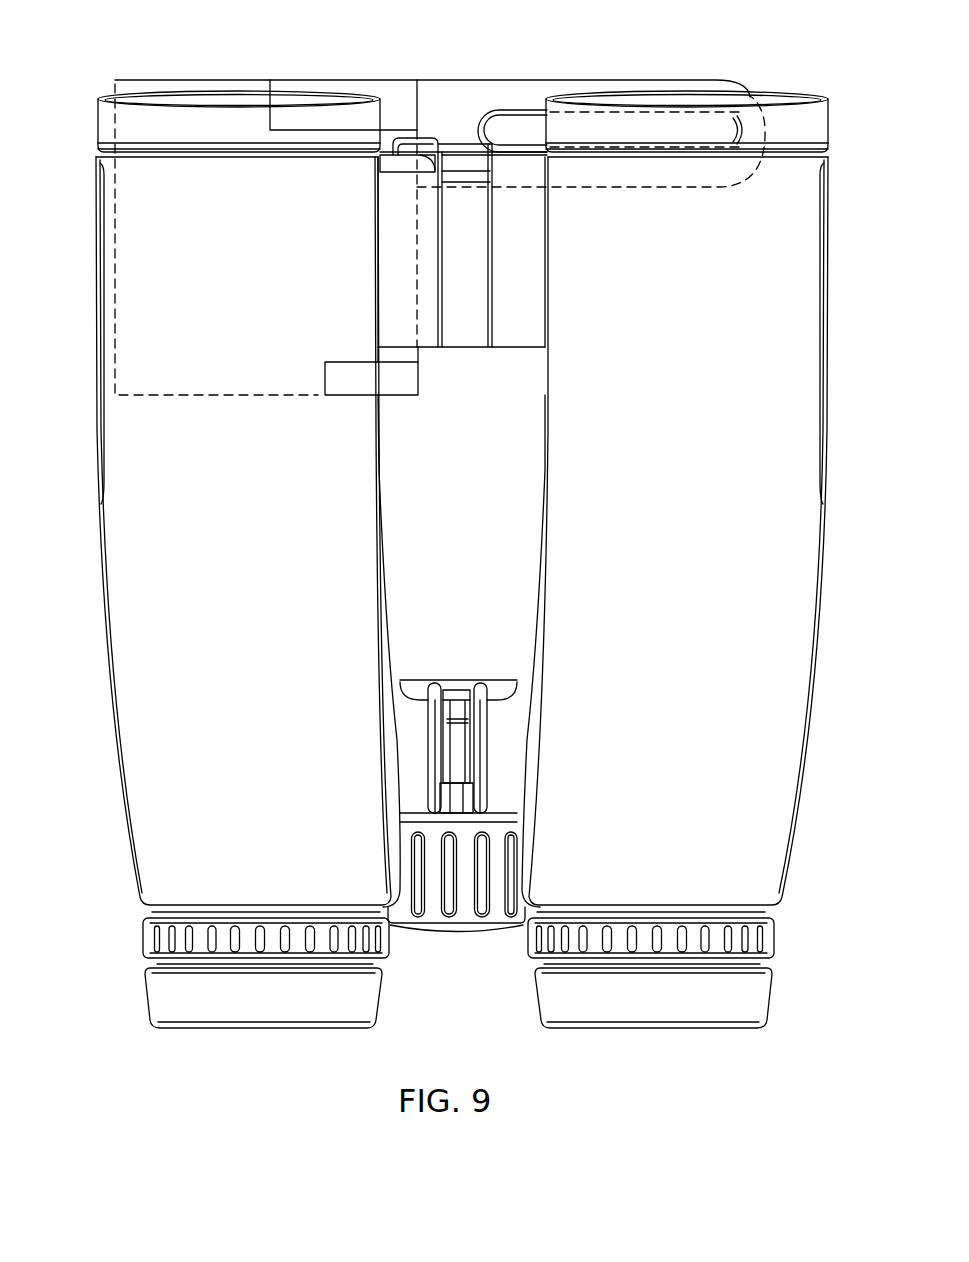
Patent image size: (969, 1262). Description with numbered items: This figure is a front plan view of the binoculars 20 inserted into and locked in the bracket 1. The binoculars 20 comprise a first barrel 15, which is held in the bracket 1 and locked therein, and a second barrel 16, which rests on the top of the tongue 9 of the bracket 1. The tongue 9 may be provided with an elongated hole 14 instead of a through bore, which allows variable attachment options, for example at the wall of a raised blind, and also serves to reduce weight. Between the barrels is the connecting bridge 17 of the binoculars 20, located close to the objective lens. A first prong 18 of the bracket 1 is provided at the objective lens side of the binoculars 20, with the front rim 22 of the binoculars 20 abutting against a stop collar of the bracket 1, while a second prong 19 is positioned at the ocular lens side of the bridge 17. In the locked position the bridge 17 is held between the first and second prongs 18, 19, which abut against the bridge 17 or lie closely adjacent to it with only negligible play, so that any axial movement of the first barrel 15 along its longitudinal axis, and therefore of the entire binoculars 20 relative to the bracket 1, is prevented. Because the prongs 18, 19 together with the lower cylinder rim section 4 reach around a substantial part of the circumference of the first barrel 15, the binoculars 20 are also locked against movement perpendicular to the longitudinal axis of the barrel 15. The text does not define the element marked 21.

The bracket 1 is at (136, 38).
The lower cylinder rim section 4 is at (130, 207).
The tongue 9 is at (527, 90).
The elongated hole 14 is at (527, 132).
The first barrel 15 is at (132, 613).
The second barrel 16 is at (792, 645).
The connecting bridge 17 is at (450, 170).
The first prong 18 is at (395, 97).
The second prong 19 is at (407, 380).
The binoculars 20 is at (729, 55).
The pin 21 is at (330, 373).
The front rim 22 is at (183, 107).